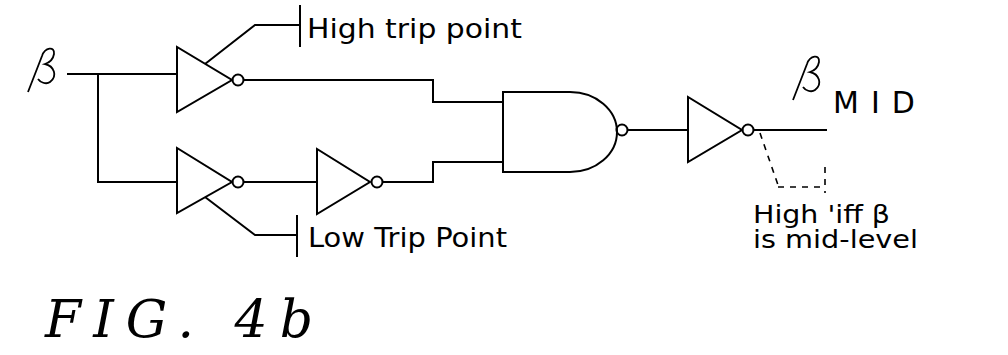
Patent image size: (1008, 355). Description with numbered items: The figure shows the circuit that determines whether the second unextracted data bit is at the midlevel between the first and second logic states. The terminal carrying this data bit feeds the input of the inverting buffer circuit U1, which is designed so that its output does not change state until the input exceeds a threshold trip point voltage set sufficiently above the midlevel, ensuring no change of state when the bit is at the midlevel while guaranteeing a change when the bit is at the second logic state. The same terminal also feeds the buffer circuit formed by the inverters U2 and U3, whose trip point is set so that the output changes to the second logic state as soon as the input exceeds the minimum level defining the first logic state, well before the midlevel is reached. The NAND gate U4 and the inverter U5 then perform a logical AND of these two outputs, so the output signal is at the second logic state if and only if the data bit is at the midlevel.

The inverting buffer circuit U1 is at (210, 79).
The inverter U2 is at (210, 180).
The inverter U3 is at (350, 181).
The NAND gate U4 is at (565, 132).
The inverter U5 is at (721, 129).